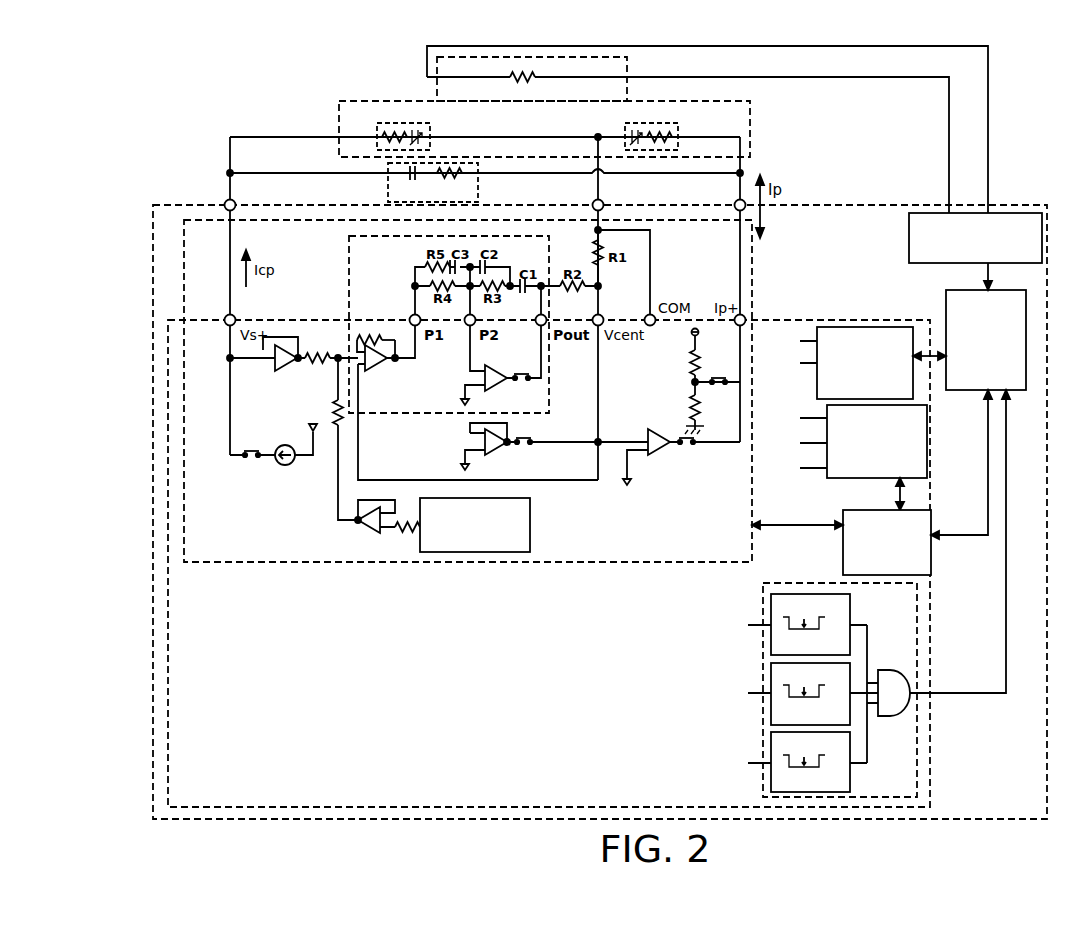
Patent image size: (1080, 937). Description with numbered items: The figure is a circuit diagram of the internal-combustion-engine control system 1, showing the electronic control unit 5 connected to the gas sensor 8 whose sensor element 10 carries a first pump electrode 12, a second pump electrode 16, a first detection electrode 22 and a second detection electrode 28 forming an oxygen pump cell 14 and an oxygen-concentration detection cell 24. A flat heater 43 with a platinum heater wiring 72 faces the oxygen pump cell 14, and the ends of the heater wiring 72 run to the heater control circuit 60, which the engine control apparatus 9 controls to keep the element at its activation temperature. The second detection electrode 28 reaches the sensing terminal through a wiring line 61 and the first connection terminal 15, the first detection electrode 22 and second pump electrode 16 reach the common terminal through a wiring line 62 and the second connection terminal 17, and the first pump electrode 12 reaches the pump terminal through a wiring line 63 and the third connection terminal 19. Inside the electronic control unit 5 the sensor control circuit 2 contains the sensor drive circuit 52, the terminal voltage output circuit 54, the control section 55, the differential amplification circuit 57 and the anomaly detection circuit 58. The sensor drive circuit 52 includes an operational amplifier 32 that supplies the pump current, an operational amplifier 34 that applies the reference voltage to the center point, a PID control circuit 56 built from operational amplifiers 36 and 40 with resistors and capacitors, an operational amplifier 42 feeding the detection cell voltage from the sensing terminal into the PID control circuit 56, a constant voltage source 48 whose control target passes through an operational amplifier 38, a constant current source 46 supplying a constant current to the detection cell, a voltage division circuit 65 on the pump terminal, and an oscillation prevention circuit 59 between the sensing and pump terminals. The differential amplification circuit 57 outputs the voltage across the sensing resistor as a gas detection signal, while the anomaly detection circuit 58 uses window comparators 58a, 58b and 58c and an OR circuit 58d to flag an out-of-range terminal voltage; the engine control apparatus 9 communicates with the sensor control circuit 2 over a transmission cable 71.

The internal-combustion-engine control system 1 is at (286, 101).
The sensor control circuit 2 is at (825, 320).
The electronic control unit 5 is at (836, 205).
The gas sensor 8 is at (806, 88).
The engine control apparatus 9 is at (946, 307).
The sensor element 10 is at (750, 132).
The first pump electrode 12 is at (674, 134).
The oxygen pump cell 14 is at (645, 123).
The first connection terminal 15 is at (224, 203).
The second pump electrode 16 is at (606, 120).
The second connection terminal 17 is at (592, 203).
The third connection terminal 19 is at (734, 203).
The first detection electrode 22 is at (432, 133).
The oxygen-concentration detection cell 24 is at (398, 123).
The second detection electrode 28 is at (378, 135).
The operational amplifier 32 is at (662, 450).
The operational amplifier 34 is at (500, 448).
The operational amplifier 36 is at (500, 386).
The operational amplifier 38 is at (360, 530).
The operational amplifier 40 is at (378, 366).
The operational amplifier 42 is at (286, 366).
The heater 43 is at (627, 82).
The constant current source 46 is at (292, 463).
The constant voltage source 48 is at (530, 522).
The sensor drive circuit 52 is at (184, 272).
The terminal voltage output circuit 54 is at (827, 476).
The control section 55 is at (843, 546).
The PID control circuit 56 is at (349, 280).
The differential amplification circuit 57 is at (862, 327).
The anomaly detection circuit 58 is at (695, 640).
The window comparator 58a is at (771, 605).
The window comparator 58b is at (771, 675).
The window comparator 58c is at (771, 743).
The OR circuit 58d is at (893, 716).
The oscillation prevention circuit 59 is at (388, 178).
The heater control circuit 60 is at (909, 240).
The wiring line 61 is at (230, 172).
The wiring line 62 is at (601, 176).
The wiring line 63 is at (741, 172).
The voltage division circuit 65 is at (665, 412).
The transmission cable 71 is at (960, 537).
The heater wiring 72 is at (535, 80).